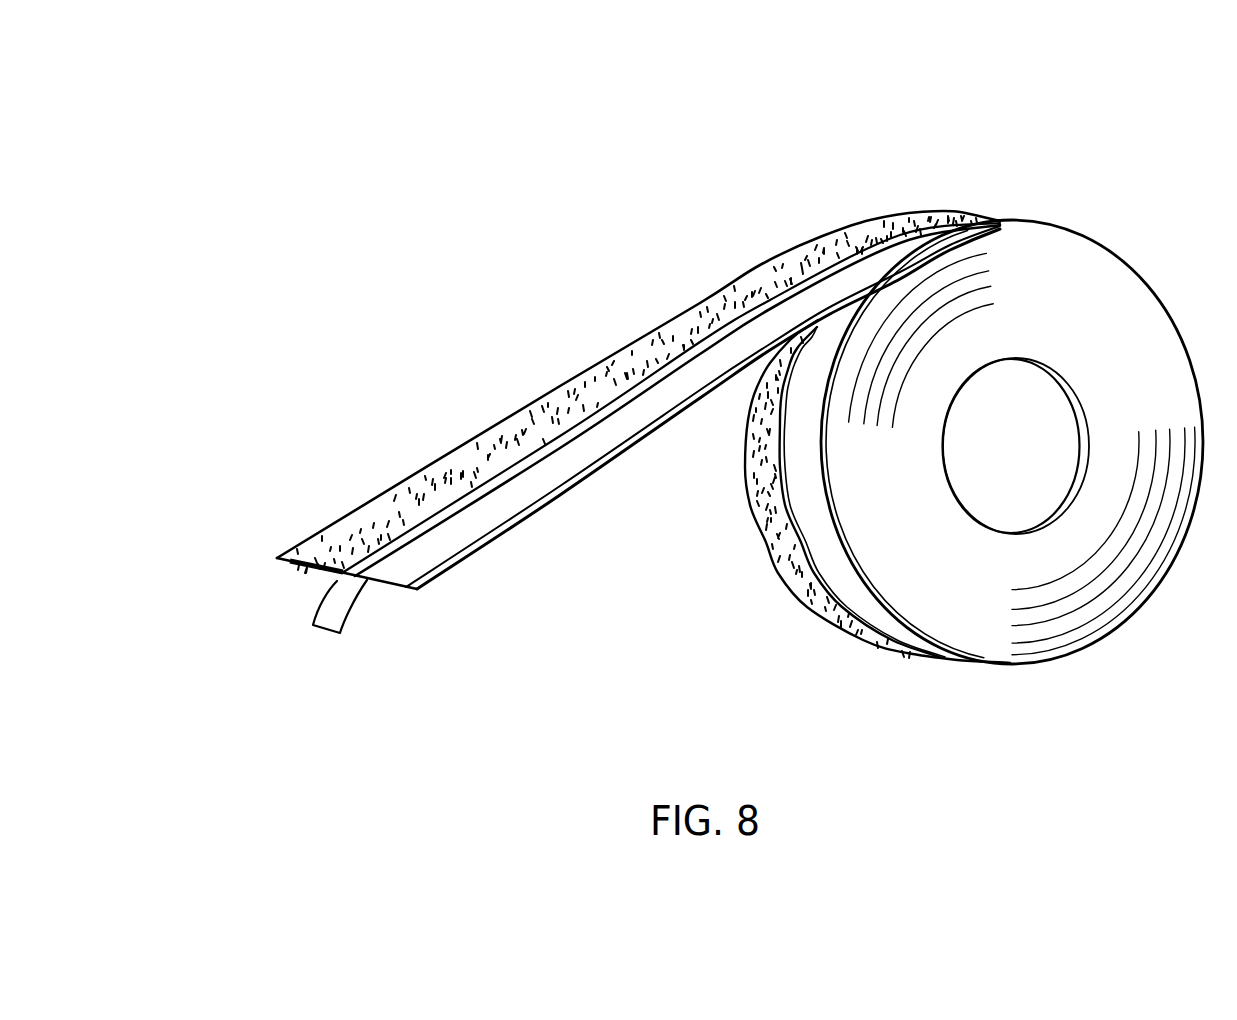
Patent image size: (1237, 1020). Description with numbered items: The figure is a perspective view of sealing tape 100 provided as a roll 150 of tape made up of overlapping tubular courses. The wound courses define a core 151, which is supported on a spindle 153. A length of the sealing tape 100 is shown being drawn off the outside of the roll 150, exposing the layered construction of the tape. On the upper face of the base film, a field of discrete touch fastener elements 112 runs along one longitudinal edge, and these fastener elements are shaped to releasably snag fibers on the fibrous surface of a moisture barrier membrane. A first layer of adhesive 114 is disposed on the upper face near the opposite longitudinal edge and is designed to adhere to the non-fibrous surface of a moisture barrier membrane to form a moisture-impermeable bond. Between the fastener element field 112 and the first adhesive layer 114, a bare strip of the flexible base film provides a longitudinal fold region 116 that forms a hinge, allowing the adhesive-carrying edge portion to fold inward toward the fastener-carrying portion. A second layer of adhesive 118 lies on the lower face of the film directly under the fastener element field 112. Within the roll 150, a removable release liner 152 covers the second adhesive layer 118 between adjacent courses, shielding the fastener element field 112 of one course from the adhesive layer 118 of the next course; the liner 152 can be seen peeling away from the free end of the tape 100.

The sealing tape 100 is at (412, 466).
The field of discrete touch fastener elements 112 is at (745, 285).
The first layer of adhesive 114 is at (505, 510).
The longitudinal fold region 116 is at (613, 407).
The second layer of adhesive 118 is at (303, 570).
The roll of tape 150 is at (980, 178).
The core 151 is at (1038, 459).
The removable release liner 152 is at (353, 610).
The spindle 153 is at (1011, 356).